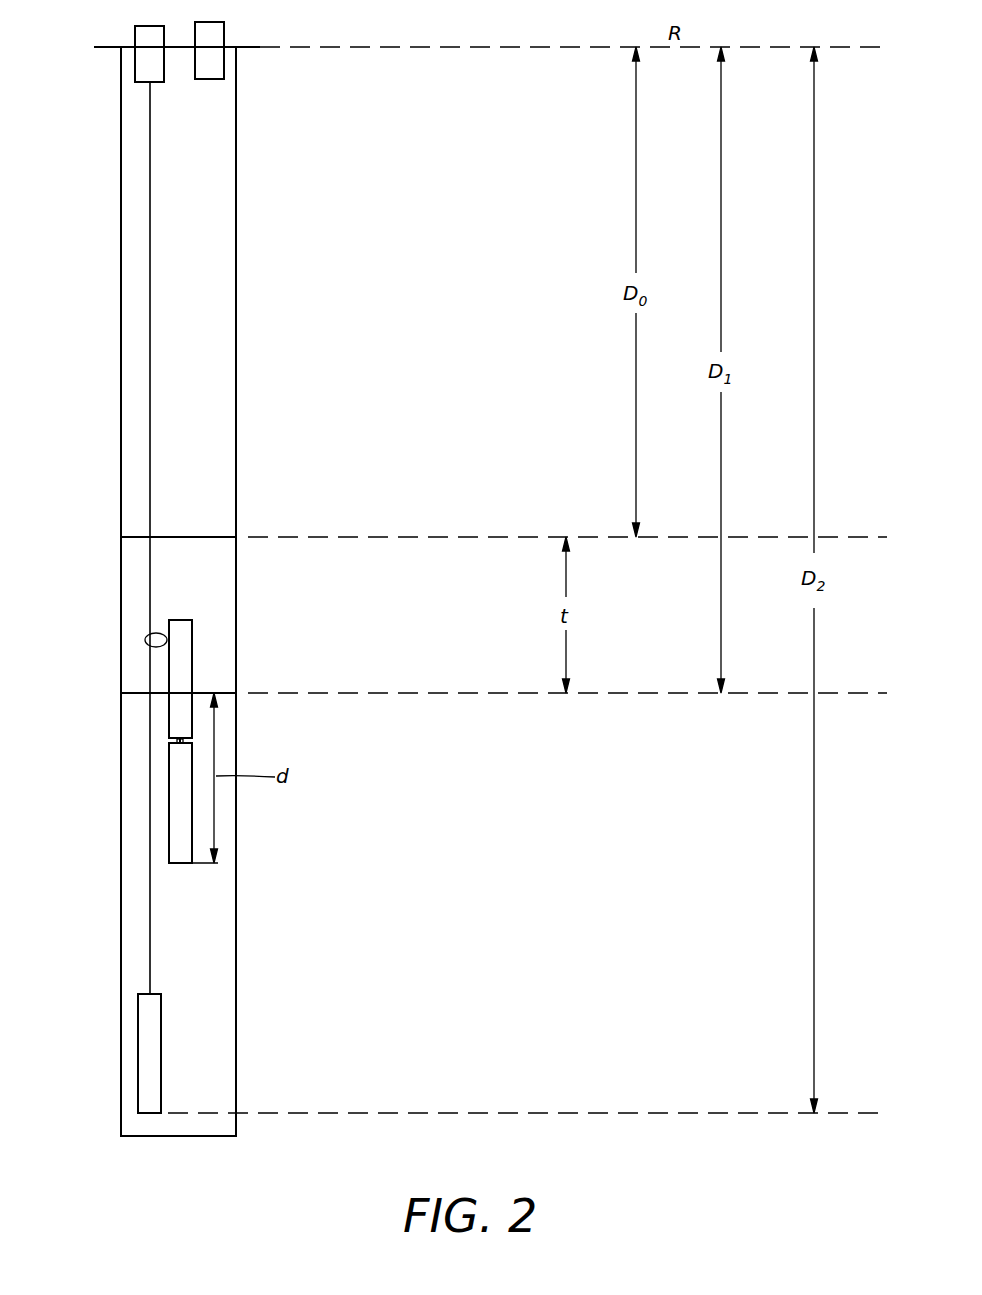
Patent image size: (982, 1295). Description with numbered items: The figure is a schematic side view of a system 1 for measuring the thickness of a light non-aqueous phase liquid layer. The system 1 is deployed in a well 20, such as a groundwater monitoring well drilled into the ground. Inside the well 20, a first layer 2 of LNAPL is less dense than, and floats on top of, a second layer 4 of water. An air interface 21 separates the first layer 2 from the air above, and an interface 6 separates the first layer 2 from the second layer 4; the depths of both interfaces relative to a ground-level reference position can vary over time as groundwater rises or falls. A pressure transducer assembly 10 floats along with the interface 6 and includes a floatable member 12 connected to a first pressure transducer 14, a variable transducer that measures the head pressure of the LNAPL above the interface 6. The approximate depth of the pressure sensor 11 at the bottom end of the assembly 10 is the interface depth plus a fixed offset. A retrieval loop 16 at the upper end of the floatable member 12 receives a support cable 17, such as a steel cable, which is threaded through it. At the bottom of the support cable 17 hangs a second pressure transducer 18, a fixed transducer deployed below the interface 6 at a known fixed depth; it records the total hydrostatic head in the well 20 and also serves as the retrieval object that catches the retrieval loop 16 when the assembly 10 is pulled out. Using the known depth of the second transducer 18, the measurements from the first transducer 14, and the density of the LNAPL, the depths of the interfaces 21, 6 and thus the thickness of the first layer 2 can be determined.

The system 1 is at (348, 263).
The first layer 2 is at (219, 548).
The second layer 4 is at (206, 1074).
The interface 6 is at (220, 692).
The pressure transducer assembly 10 is at (122, 682).
The pressure sensor 11 is at (169, 858).
The floatable member 12 is at (169, 685).
The first pressure transducer 14 is at (169, 802).
The retrieval loop 16 is at (175, 600).
The support cable 17 is at (150, 175).
The second pressure transducer 18 is at (138, 1072).
The well 20 is at (121, 112).
The air interface 21 is at (192, 537).